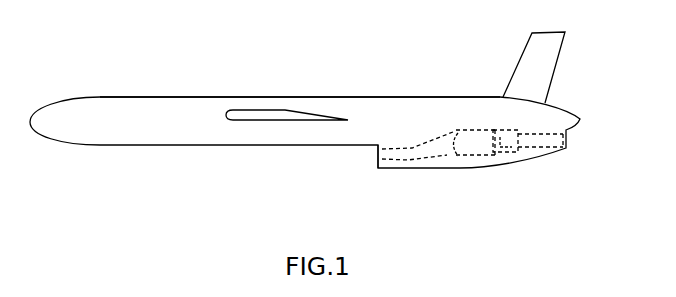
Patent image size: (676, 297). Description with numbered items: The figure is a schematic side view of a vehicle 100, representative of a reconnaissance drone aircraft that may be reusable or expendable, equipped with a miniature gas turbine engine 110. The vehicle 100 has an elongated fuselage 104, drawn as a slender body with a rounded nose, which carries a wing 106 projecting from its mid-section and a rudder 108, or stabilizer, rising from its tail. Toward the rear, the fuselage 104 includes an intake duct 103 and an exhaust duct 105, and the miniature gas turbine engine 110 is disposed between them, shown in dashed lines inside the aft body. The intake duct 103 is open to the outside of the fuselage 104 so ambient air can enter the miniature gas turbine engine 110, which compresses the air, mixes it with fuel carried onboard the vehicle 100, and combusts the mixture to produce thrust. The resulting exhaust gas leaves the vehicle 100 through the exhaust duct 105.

The vehicle 100 is at (107, 39).
The fuselage 104 is at (150, 97).
The wing 106 is at (265, 120).
The rudder 108 is at (551, 69).
The intake duct 103 is at (412, 153).
The miniature gas turbine engine 110 is at (470, 120).
The exhaust duct 105 is at (528, 152).